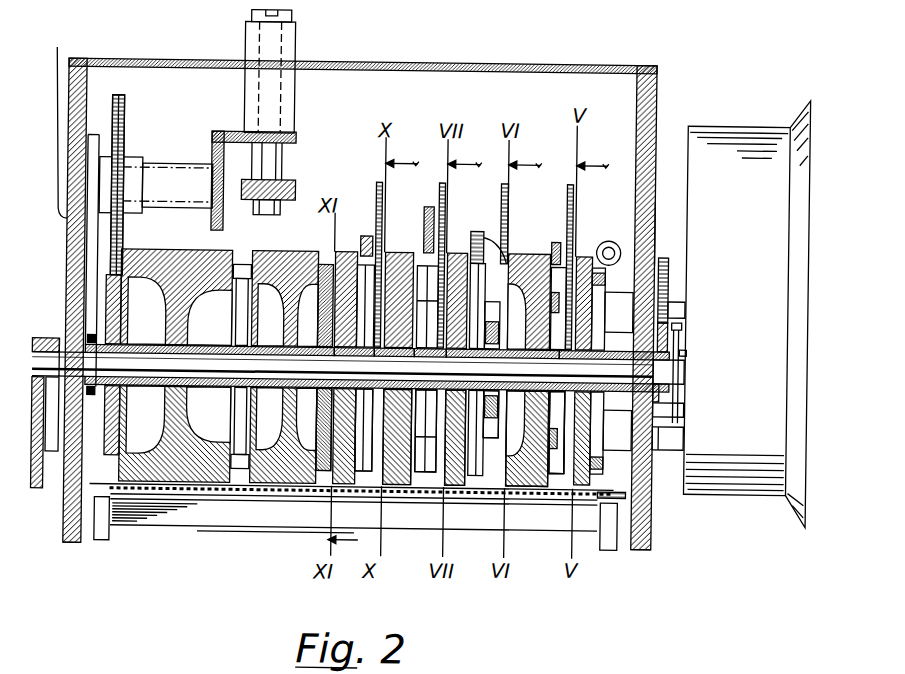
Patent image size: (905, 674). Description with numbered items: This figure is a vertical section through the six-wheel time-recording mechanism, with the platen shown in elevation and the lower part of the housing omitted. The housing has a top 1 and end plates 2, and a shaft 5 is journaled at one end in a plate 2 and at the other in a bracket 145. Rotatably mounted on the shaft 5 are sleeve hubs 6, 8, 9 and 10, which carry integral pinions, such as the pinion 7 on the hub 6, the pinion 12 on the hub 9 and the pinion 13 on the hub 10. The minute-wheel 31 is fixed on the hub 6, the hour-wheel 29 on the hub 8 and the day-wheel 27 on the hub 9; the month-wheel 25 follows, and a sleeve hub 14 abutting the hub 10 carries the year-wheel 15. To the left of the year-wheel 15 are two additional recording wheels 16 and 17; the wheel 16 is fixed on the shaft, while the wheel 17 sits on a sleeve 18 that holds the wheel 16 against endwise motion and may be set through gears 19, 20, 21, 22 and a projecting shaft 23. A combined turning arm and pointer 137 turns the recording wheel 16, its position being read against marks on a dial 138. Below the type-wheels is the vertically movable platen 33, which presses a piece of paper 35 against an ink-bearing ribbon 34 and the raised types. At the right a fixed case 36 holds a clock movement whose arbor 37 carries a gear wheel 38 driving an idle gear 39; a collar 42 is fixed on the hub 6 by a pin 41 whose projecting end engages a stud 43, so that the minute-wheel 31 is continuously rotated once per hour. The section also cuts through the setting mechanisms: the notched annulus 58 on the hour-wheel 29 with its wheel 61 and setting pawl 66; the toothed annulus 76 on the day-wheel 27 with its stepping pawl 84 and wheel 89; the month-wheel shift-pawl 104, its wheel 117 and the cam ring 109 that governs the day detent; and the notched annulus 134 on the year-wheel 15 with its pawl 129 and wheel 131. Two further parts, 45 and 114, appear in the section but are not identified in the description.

The housing top 1 is at (527, 63).
The end plates 2 is at (73, 548).
The shaft 5 is at (138, 389).
The sleeve hub 6 is at (688, 376).
The pinion 7 is at (559, 432).
The sleeve hub 8 is at (531, 486).
The sleeve hub 9 is at (459, 250).
The sleeve hub 10 is at (400, 262).
The pinion 12 is at (428, 388).
The pinion 13 is at (380, 356).
The sleeve hub 14 is at (340, 356).
The year-wheel 15 is at (328, 490).
The recording wheel 16 is at (306, 254).
The recording wheel 17 is at (184, 254).
The sleeve 18 is at (141, 348).
The gear 19 is at (114, 530).
The gear 20 is at (122, 111).
The gear 21 is at (211, 154).
The gear 22 is at (226, 133).
The projecting shaft 23 is at (270, 165).
The month-wheel 25 is at (400, 488).
The day-wheel 27 is at (447, 486).
The hour-wheel 29 is at (528, 260).
The minute-wheel 31 is at (585, 272).
The platen 33 is at (224, 530).
The ink-bearing ribbon 34 is at (613, 493).
The paper 35 is at (619, 503).
The case 36 is at (735, 122).
The arbor 37 is at (680, 304).
The gear wheel 38 is at (668, 262).
The idle gear 39 is at (661, 446).
The pin 41 is at (681, 342).
The collar 42 is at (687, 349).
The stud 43 is at (685, 406).
The wall face 45 is at (655, 224).
The annulus 58 is at (555, 486).
The wheel 61 is at (574, 192).
The setting pawl 66 is at (555, 240).
The annulus 76 is at (520, 492).
The pawl 84 is at (472, 230).
The wheel 89 is at (503, 200).
The shift-pawl 104 is at (423, 215).
The cam ring 109 is at (426, 482).
The sleeve 114 is at (420, 232).
The wheel 117 is at (443, 200).
The pawl 129 is at (364, 236).
The wheel 131 is at (376, 225).
The annulus 134 is at (362, 488).
The turning arm and pointer 137 is at (38, 492).
The dial 138 is at (65, 122).
The bracket 145 is at (557, 350).